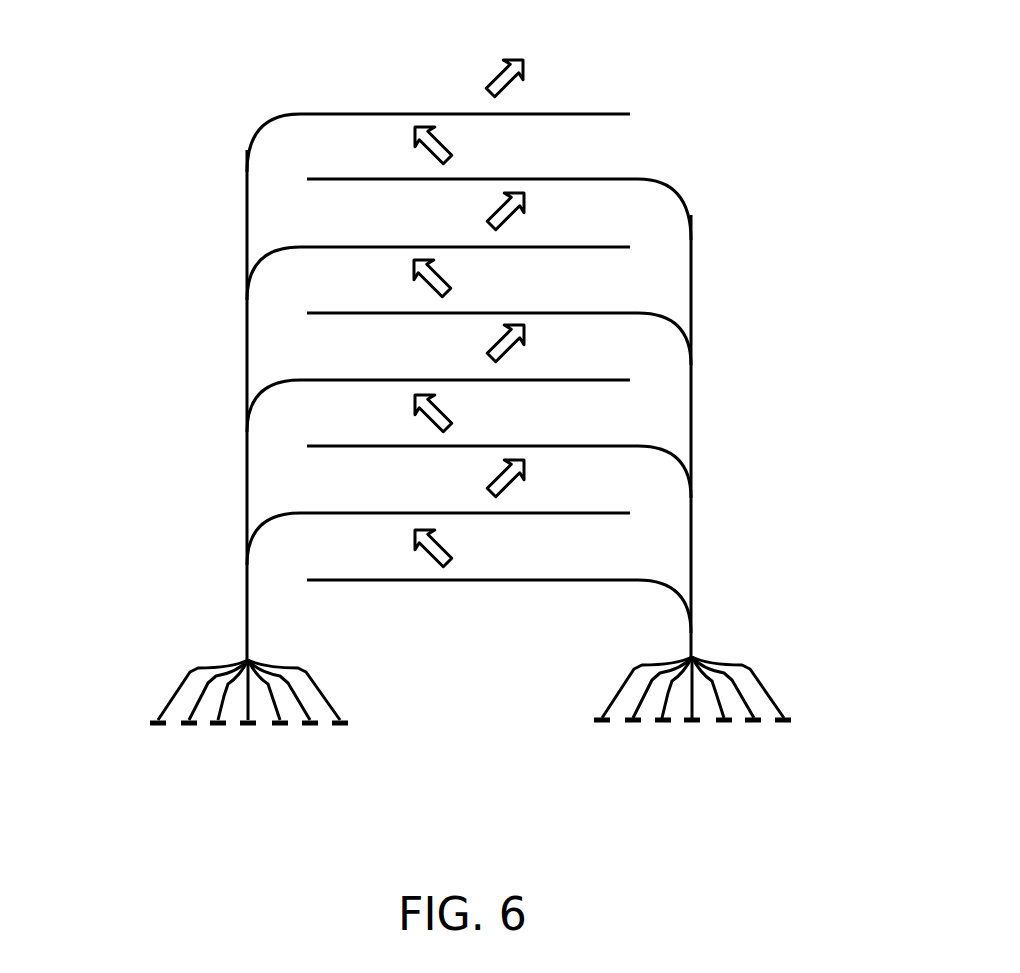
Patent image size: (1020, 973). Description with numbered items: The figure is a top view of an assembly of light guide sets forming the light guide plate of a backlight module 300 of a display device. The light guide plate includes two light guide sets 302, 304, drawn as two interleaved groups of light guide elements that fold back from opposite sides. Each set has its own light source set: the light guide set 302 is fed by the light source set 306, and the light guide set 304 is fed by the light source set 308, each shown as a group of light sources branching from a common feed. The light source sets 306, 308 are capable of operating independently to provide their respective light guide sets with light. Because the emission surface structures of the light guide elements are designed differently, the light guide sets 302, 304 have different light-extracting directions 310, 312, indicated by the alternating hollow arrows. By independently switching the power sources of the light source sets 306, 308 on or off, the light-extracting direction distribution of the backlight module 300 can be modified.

The backlight module 300 is at (190, 112).
The light guide set 302 is at (245, 358).
The light guide set 304 is at (693, 408).
The light source set 306 is at (135, 726).
The light source set 308 is at (808, 722).
The light-extracting direction 310 is at (495, 84).
The light-extracting direction 312 is at (450, 153).